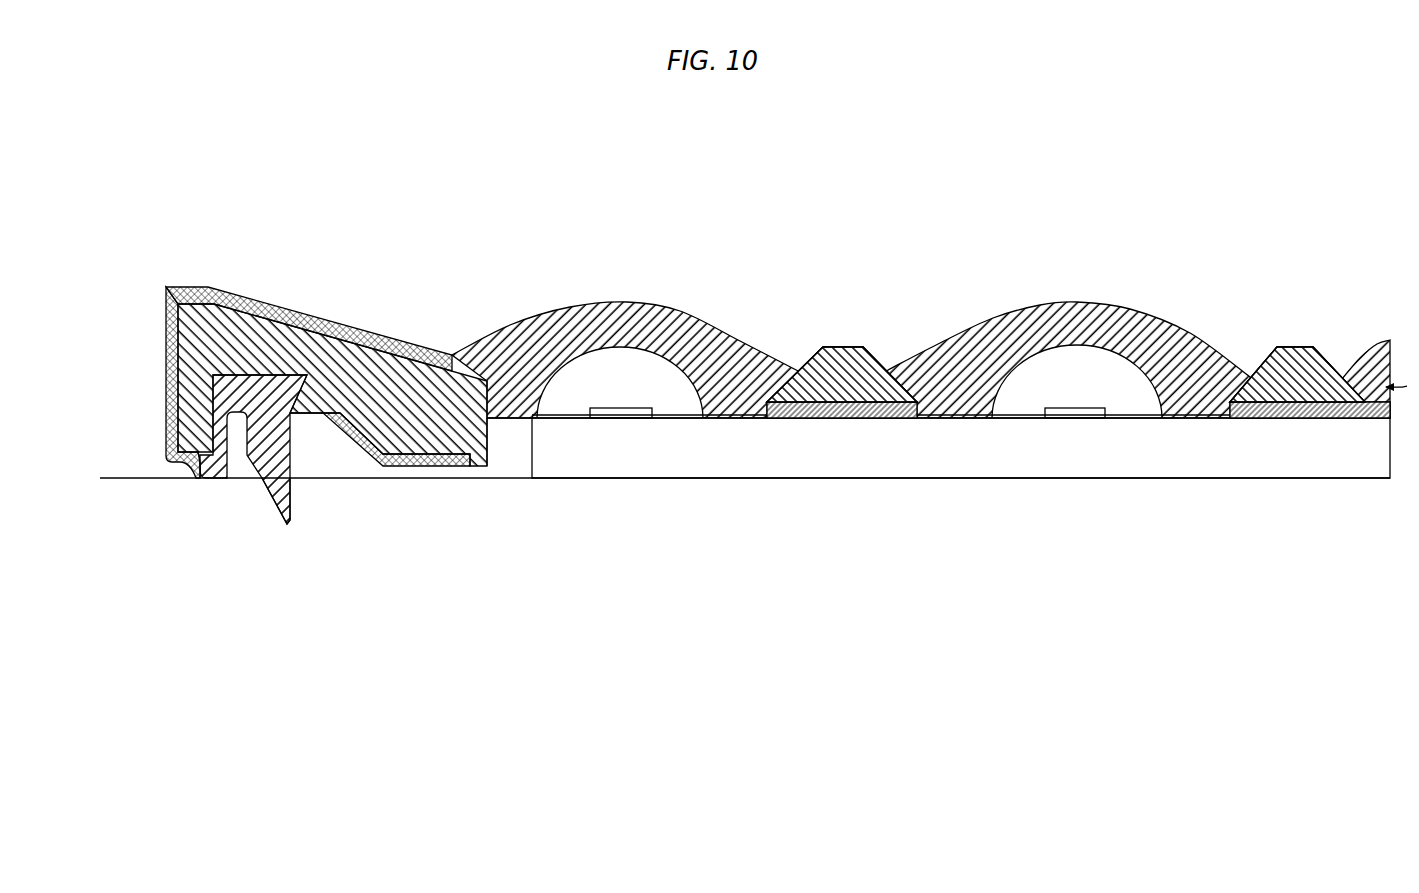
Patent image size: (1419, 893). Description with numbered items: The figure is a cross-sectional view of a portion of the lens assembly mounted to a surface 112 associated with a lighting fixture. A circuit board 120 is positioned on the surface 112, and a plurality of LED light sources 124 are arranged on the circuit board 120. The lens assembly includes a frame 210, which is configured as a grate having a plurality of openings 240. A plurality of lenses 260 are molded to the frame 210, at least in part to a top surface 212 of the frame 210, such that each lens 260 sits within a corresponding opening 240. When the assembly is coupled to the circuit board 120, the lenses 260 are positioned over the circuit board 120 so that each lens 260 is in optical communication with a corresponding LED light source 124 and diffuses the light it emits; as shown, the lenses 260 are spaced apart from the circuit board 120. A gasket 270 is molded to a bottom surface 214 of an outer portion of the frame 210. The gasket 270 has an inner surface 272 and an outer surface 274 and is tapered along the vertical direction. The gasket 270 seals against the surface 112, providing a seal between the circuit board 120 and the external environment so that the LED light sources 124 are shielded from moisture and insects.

The surface 112 is at (128, 474).
The circuit board 120 is at (971, 461).
The LED light sources 124 is at (614, 401).
The frame 210 is at (372, 340).
The top surface 212 is at (263, 307).
The bottom surface 214 is at (199, 480).
The openings 240 is at (506, 448).
The lenses 260 is at (669, 302).
The gasket 270 is at (293, 497).
The inner surface 272 is at (293, 433).
The outer surface 274 is at (276, 505).